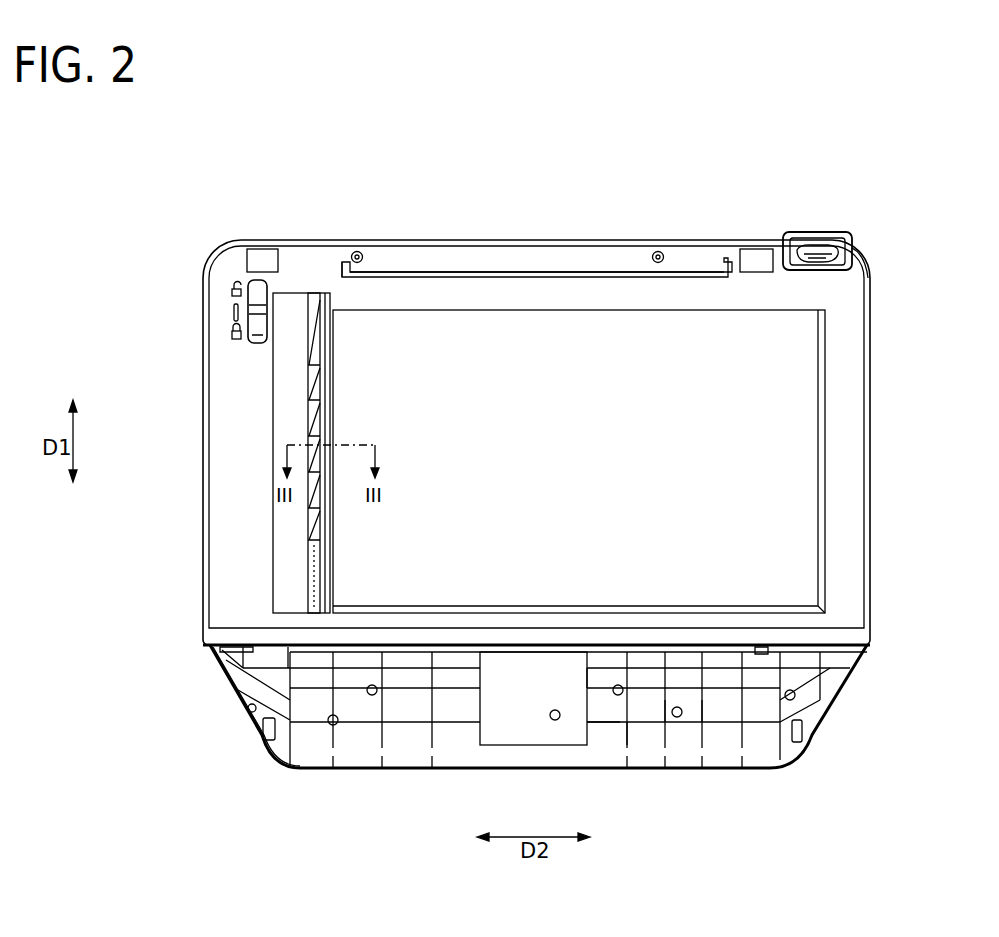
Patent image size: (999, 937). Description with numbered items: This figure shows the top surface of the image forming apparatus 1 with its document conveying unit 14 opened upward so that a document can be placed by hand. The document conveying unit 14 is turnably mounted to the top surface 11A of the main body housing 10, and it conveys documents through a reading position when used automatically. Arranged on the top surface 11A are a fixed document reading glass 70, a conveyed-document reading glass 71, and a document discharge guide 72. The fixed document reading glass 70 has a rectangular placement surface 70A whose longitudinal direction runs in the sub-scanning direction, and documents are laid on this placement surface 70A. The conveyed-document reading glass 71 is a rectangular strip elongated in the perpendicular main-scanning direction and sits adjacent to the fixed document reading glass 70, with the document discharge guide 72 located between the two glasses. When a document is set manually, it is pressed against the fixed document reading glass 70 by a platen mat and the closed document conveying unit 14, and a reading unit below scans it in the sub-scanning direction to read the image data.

The image forming apparatus 1 is at (903, 218).
The main body housing 10 is at (870, 395).
The top surface 11A is at (850, 457).
The fixed document reading glass 70 is at (760, 530).
The placement surface 70A is at (760, 570).
The conveyed-document reading glass 71 is at (290, 580).
The document discharge guide 72 is at (312, 552).
The document conveying unit 14 is at (465, 757).